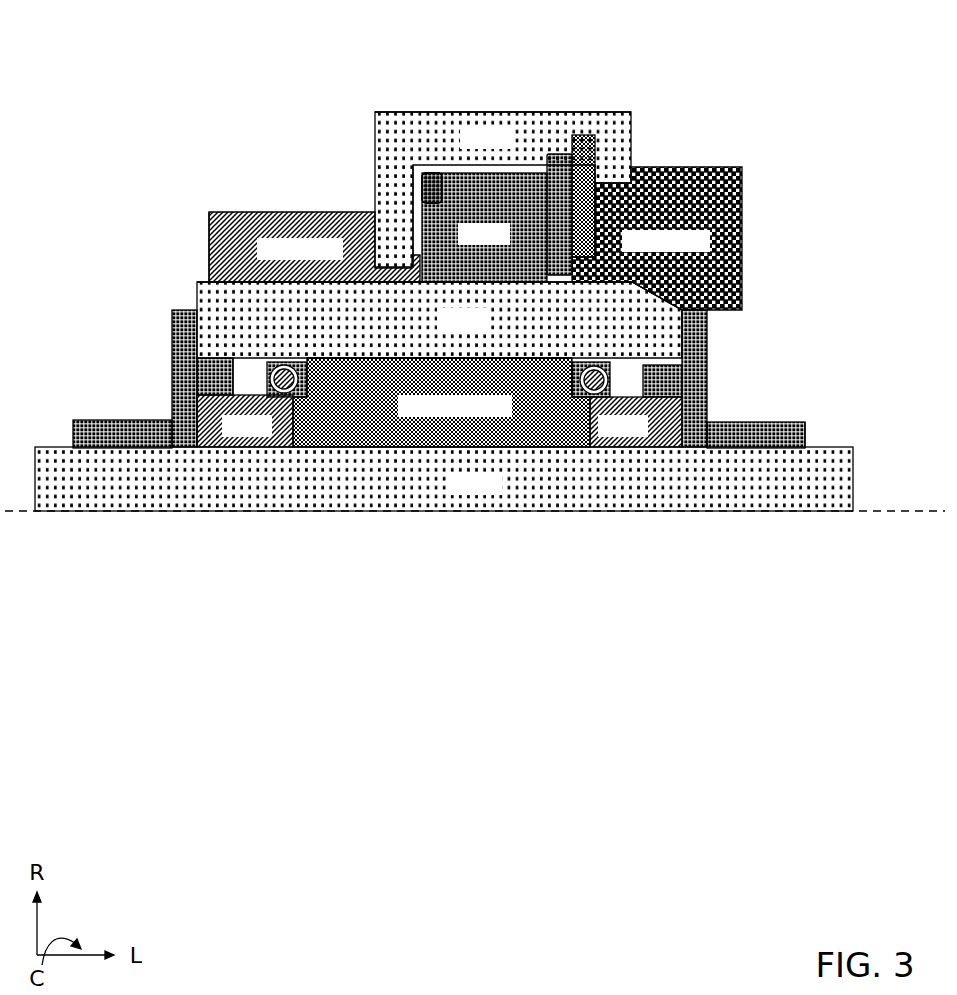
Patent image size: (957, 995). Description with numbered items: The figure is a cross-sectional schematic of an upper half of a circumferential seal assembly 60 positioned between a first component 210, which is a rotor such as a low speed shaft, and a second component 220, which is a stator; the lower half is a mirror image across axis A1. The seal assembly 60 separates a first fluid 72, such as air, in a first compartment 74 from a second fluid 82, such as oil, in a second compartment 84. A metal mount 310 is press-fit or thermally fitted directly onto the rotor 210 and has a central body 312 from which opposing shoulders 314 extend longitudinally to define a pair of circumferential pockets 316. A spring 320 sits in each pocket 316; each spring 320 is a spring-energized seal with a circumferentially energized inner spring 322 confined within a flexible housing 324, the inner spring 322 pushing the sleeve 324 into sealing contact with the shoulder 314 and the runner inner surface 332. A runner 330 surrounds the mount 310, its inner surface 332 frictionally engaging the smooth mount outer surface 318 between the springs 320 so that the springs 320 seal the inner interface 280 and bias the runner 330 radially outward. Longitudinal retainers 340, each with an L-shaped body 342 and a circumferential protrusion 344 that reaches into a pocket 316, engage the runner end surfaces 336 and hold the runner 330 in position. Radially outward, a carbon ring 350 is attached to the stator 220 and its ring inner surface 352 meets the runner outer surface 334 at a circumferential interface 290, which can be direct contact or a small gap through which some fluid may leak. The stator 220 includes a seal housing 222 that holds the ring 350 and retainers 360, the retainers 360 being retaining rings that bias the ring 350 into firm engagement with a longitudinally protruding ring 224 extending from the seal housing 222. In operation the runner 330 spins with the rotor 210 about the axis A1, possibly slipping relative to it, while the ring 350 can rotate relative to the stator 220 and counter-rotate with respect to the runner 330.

The circumferential seal assembly 60 is at (194, 100).
The first fluid 72 is at (314, 247).
The first compartment 74 is at (262, 259).
The second fluid 82 is at (657, 238).
The second compartment 84 is at (627, 251).
The first component 210 is at (454, 494).
The second component 220 is at (464, 148).
The seal housing 222 is at (447, 111).
The longitudinally protruding ring 224 is at (440, 200).
The inner interface 280 is at (370, 374).
The circumferential interface 290 is at (518, 263).
The mount 310 is at (441, 402).
The central body 312 is at (405, 416).
The shoulder 314 is at (227, 436).
The circumferential pocket 316 is at (200, 397).
The outer surface 318 is at (690, 342).
The spring 320 is at (250, 392).
The inner spring 322 is at (632, 380).
The flexible housing 324 is at (570, 382).
The runner 330 is at (441, 329).
The runner inner surface 332 is at (255, 373).
The runner outer surface 334 is at (447, 243).
The longitudinal end surface 336 is at (170, 323).
The longitudinal retainer 340 is at (828, 432).
The L-shaped body 342 is at (715, 430).
The circumferential protrusion 344 is at (213, 390).
The ring 350 is at (462, 244).
The ring inner surface 352 is at (447, 243).
The retainer 360 is at (595, 130).
The axis A1 is at (892, 512).